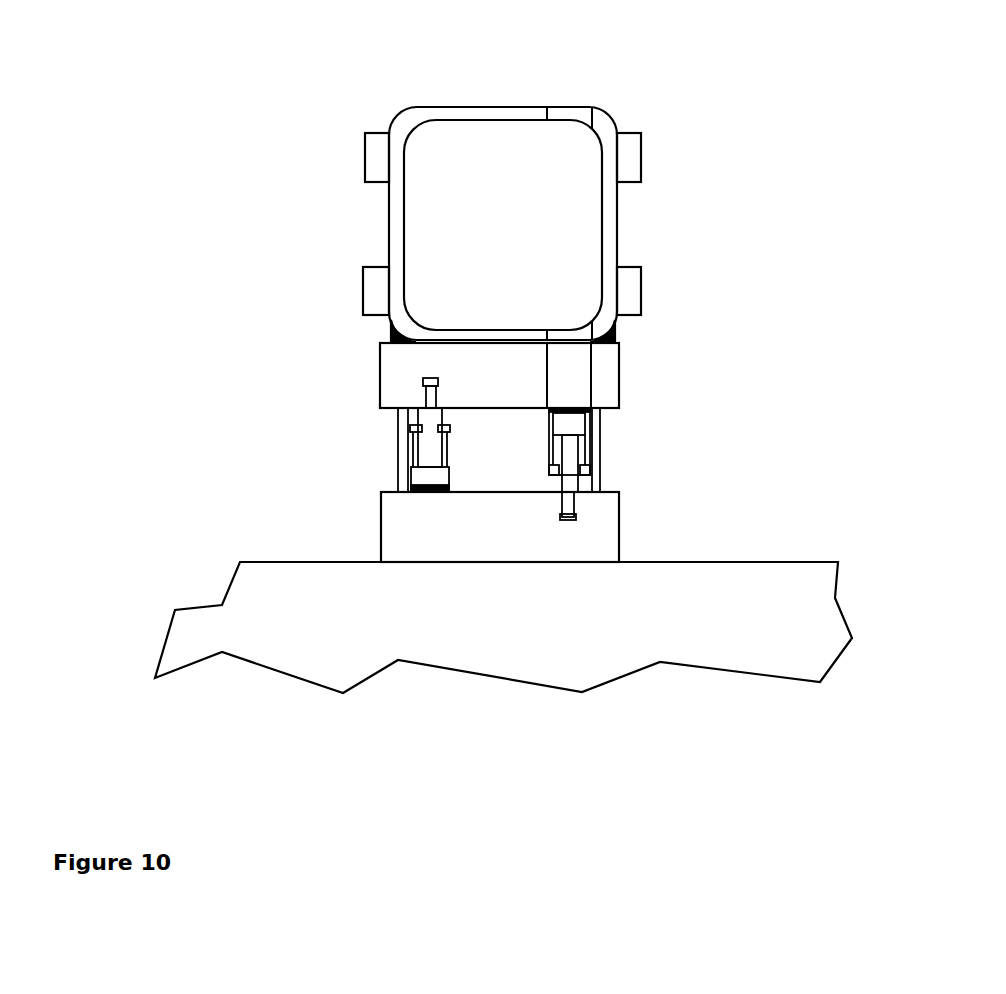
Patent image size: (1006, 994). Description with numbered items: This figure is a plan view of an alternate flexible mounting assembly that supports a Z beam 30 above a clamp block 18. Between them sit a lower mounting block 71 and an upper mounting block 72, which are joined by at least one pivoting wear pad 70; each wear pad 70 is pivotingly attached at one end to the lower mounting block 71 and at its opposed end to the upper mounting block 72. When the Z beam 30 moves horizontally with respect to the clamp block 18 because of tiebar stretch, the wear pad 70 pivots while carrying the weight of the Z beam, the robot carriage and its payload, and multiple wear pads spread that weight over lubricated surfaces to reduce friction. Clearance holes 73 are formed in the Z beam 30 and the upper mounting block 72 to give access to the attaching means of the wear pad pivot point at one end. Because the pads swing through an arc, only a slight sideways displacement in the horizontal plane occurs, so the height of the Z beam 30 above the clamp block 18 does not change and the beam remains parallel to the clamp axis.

The clamp block 18 is at (807, 627).
The Z beam 30 is at (607, 237).
The pivoting wear pad 70 is at (478, 435).
The lower mounting block 71 is at (595, 543).
The upper mounting block 72 is at (407, 367).
The clearance holes 73 is at (577, 110).